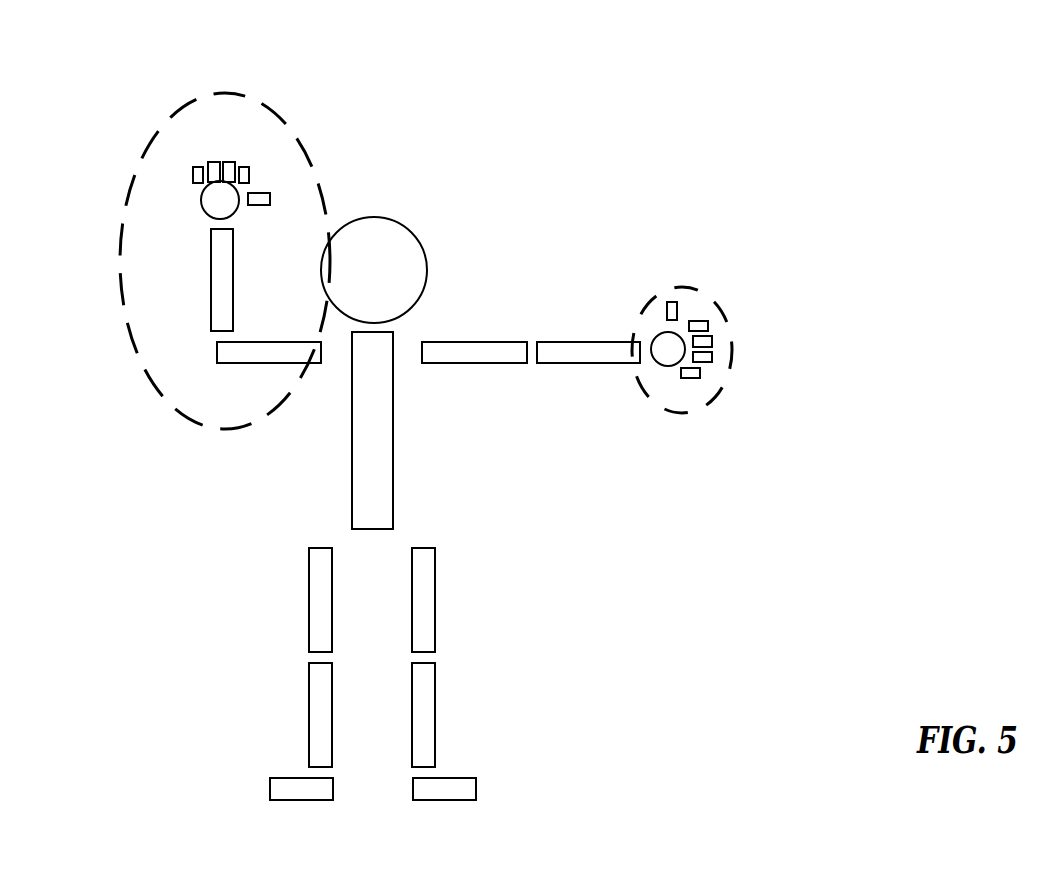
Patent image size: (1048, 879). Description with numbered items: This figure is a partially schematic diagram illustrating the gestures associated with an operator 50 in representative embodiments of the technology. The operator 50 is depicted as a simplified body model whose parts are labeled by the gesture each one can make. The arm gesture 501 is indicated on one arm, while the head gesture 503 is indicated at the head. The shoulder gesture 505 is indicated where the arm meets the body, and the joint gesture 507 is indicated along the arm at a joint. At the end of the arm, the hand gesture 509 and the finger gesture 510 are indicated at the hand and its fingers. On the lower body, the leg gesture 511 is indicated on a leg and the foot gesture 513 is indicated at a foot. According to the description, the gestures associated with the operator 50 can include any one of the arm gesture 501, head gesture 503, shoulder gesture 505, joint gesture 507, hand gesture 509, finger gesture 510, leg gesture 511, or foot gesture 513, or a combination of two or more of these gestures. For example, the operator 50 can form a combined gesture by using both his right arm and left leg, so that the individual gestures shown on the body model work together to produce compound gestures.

The operator 50 is at (559, 168).
The arm gesture 501 is at (294, 103).
The head gesture 503 is at (396, 203).
The shoulder gesture 505 is at (447, 318).
The joint gesture 507 is at (546, 321).
The hand gesture 509 is at (701, 273).
The finger gesture 510 is at (729, 329).
The leg gesture 511 is at (457, 706).
The foot gesture 513 is at (492, 778).